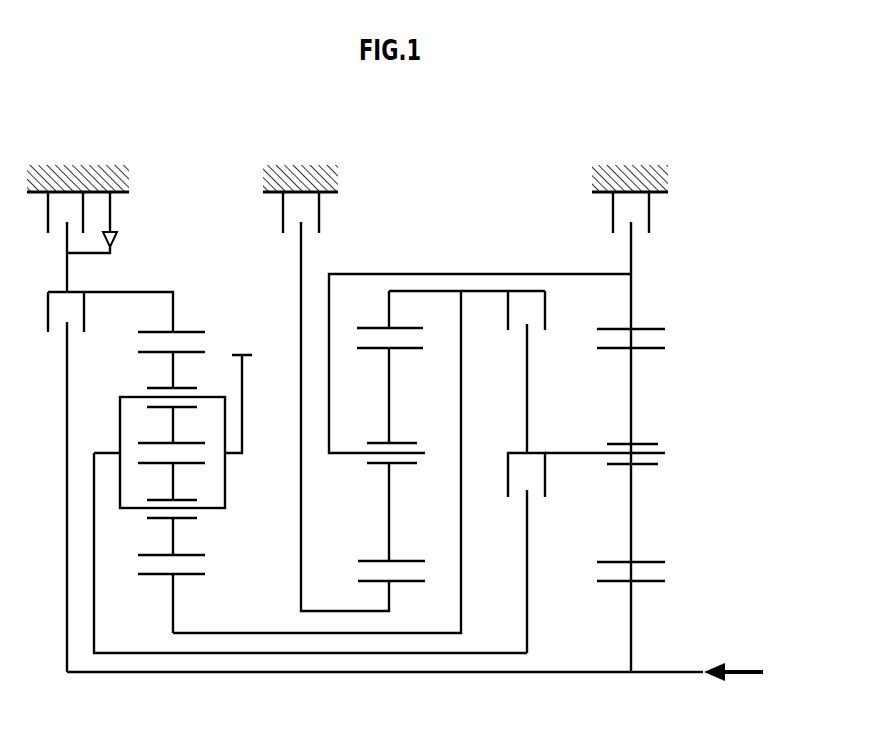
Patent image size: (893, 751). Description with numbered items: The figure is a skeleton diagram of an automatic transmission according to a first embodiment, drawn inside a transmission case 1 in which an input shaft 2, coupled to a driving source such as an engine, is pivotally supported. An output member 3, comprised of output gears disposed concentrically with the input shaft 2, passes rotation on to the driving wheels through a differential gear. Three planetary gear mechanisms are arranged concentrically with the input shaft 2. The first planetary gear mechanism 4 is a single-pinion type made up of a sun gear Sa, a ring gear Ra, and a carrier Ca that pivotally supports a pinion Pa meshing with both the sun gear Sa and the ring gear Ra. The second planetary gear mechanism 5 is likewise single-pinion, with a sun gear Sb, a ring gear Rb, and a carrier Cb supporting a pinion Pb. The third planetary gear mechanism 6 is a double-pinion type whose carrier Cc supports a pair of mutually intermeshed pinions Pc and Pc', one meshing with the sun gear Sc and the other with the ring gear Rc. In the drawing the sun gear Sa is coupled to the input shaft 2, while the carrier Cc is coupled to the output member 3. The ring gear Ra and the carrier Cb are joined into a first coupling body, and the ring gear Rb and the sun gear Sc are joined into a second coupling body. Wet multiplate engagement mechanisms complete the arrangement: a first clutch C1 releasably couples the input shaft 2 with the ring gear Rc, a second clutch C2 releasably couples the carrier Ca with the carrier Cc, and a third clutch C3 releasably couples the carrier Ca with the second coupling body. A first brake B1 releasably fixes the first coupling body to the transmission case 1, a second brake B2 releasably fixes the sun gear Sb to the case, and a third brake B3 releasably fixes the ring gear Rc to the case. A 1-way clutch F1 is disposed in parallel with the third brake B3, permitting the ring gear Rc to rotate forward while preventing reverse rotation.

The transmission case 1 is at (78, 165).
The input shaft 2 is at (681, 675).
The output member 3 is at (243, 352).
The first planetary gear mechanism 4 is at (688, 312).
The second planetary gear mechanism 5 is at (414, 266).
The third planetary gear mechanism 6 is at (176, 279).
The 1-way clutch F1 is at (119, 240).
The first brake B1 is at (631, 432).
The second brake B2 is at (336, 401).
The third brake B3 is at (65, 242).
The first clutch C1 is at (66, 482).
The second clutch C2 is at (526, 553).
The third clutch C3 is at (526, 372).
The ring gear Ra is at (655, 331).
The pinion Pa is at (605, 345).
The carrier Ca is at (571, 456).
The sun gear Sa is at (655, 580).
The ring gear Rb is at (415, 331).
The pinion Pb is at (415, 563).
The carrier Cb is at (341, 456).
The sun gear Sb is at (368, 579).
The ring gear Rc is at (142, 339).
The pinion Pc is at (310, 553).
The pinion Pc' is at (186, 343).
The carrier Cc is at (225, 488).
The sun gear Sc is at (148, 572).